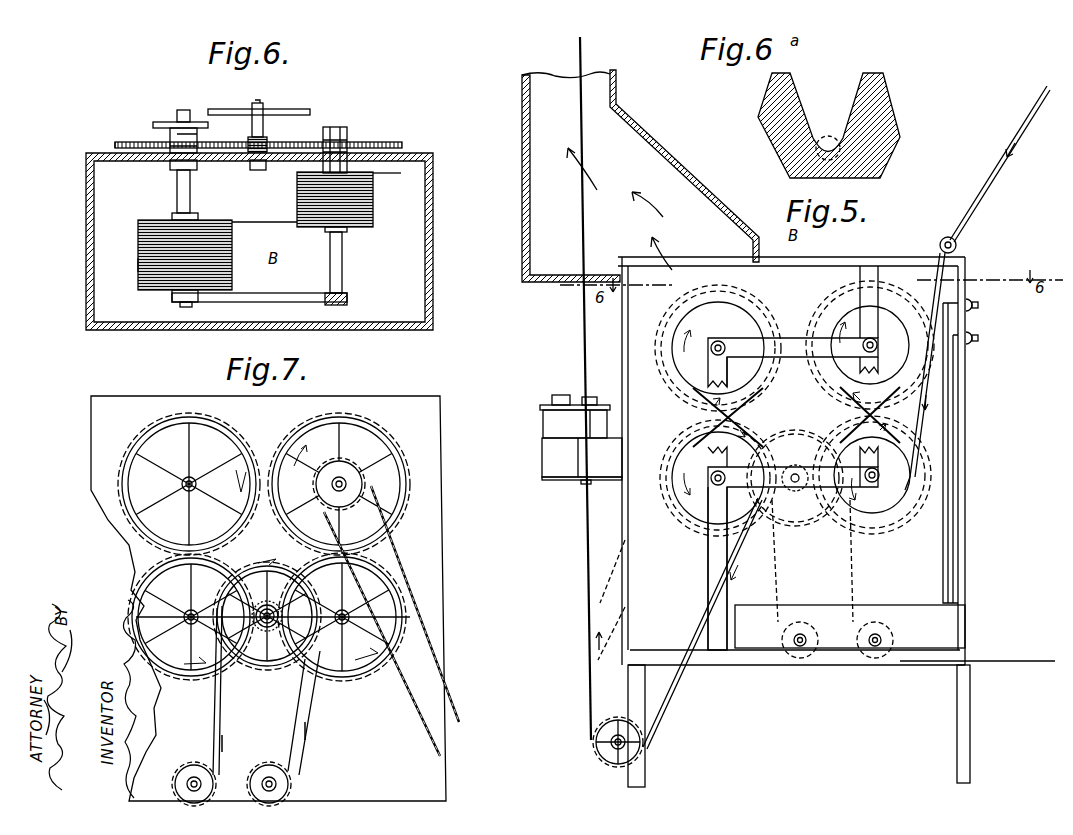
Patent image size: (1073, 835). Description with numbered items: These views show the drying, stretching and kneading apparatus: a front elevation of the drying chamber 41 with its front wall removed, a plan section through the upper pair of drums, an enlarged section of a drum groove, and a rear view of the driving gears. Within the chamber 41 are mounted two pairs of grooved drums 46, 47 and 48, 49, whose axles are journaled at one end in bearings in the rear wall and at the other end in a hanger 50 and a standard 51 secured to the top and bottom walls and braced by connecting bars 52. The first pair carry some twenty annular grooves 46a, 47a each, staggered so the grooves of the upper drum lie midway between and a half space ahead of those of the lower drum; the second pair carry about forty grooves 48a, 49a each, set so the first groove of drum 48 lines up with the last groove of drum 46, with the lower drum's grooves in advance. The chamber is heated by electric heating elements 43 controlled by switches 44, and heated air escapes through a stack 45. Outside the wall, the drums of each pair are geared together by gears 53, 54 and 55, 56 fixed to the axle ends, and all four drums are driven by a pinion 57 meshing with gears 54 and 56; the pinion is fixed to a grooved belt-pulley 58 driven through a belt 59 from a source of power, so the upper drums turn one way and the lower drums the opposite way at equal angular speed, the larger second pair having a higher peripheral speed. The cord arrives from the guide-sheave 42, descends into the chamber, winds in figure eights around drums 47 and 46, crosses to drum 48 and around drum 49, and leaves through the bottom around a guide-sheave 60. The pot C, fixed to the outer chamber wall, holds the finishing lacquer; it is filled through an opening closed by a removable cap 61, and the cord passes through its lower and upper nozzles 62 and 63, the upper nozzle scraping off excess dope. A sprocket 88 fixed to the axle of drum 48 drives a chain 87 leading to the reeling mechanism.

In FIG. 6, the casing 41 is at (433, 265).
In FIG. 5, the casing 41 is at (838, 262).
In FIG. 5, the guide-sheave 42 is at (957, 243).
In FIG. 5, the electric heating elements 43 is at (858, 605).
In FIG. 5, the switches 44 is at (976, 330).
In FIG. 5, the stack 45 is at (555, 205).
In FIG. 6, the upper drum 46 is at (355, 212).
In FIG. 5, the upper drum 46 is at (880, 335).
In FIG. 6, the annular grooves 46a is at (374, 207).
In FIG. 5, the annular grooves 46a is at (863, 377).
In FIG. 6, the lower drum 47 is at (314, 165).
In FIG. 5, the lower drum 47 is at (893, 488).
In FIG. 5, the annular grooves 47a is at (873, 530).
In FIG. 6, the upper drum 48 is at (212, 221).
In FIG. 5, the upper drum 48 is at (682, 357).
In FIG. 6, the grooves 48a is at (138, 272).
In FIG. 5, the grooves 48a is at (710, 407).
In FIG. 5, the lower drum 49 is at (682, 487).
In FIG. 5, the grooves 49a is at (697, 533).
In FIG. 6, the hanger 50 is at (350, 298).
In FIG. 5, the hanger 50 is at (878, 283).
In FIG. 6, the standard 51 is at (186, 307).
In FIG. 5, the standard 51 is at (716, 571).
In FIG. 6, the connecting bars 52 is at (293, 290).
In FIG. 5, the connecting bars 52 is at (795, 358).
In FIG. 6, the gear 53 is at (395, 142).
In FIG. 7, the gear 53 is at (142, 440).
In FIG. 5, the gear 53 is at (940, 372).
In FIG. 7, the gear 54 is at (185, 685).
In FIG. 5, the gear 54 is at (948, 460).
In FIG. 6, the gear 55 is at (132, 143).
In FIG. 7, the gear 55 is at (347, 481).
In FIG. 5, the gear 55 is at (643, 299).
In FIG. 7, the gear 56 is at (419, 638).
In FIG. 5, the gear 56 is at (636, 492).
In FIG. 6, the pinion 57 is at (267, 141).
In FIG. 7, the pinion 57 is at (254, 662).
In FIG. 5, the pinion 57 is at (772, 524).
In FIG. 6, the grooved belt-pulley 58 is at (290, 109).
In FIG. 7, the grooved belt-pulley 58 is at (275, 662).
In FIG. 5, the grooved belt-pulley 58 is at (795, 502).
In FIG. 6, the belt 59 is at (238, 116).
In FIG. 7, the belt 59 is at (219, 732).
In FIG. 5, the belt 59 is at (770, 591).
In FIG. 5, the guide-sheave 60 is at (606, 761).
In FIG. 5, the removable cap 61 is at (556, 395).
In FIG. 5, the lower nozzle 62 is at (585, 485).
In FIG. 5, the upper nozzle 63 is at (590, 396).
In FIG. 6, the chain 87 is at (181, 127).
In FIG. 7, the chain 87 is at (399, 549).
In FIG. 5, the chain 87 is at (608, 577).
In FIG. 6, the sprocket 88 is at (166, 121).
In FIG. 7, the sprocket 88 is at (336, 466).
In FIG. 5, the sprocket 88 is at (742, 301).
In FIG. 6, the pot C is at (263, 221).
In FIG. 5, the pot C is at (583, 55).